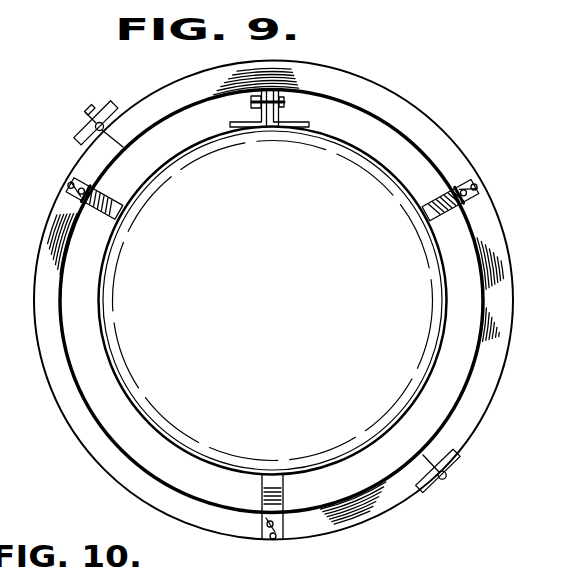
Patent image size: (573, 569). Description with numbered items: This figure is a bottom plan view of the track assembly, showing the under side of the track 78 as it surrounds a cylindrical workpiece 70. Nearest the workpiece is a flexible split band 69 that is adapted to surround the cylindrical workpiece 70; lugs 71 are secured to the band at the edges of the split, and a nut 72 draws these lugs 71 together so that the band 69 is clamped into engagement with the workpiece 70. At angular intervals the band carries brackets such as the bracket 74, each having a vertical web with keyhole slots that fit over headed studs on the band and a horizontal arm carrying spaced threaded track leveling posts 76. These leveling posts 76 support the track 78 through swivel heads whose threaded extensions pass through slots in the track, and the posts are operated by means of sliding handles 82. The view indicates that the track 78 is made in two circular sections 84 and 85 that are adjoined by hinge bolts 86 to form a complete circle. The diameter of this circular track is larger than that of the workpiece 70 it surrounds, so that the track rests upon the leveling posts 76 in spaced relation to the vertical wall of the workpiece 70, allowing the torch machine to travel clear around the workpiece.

The flexible split band 69 is at (333, 466).
The cylindrical workpiece 70 is at (170, 430).
The lugs 71 is at (280, 115).
The nut 72 is at (276, 103).
The bracket 74 is at (285, 504).
The track leveling posts 76 is at (268, 540).
The track 78 is at (480, 398).
The sliding handles 82 is at (82, 176).
The circular section 84 is at (76, 428).
The circular section 85 is at (488, 221).
The hinge bolts 86 is at (448, 476).